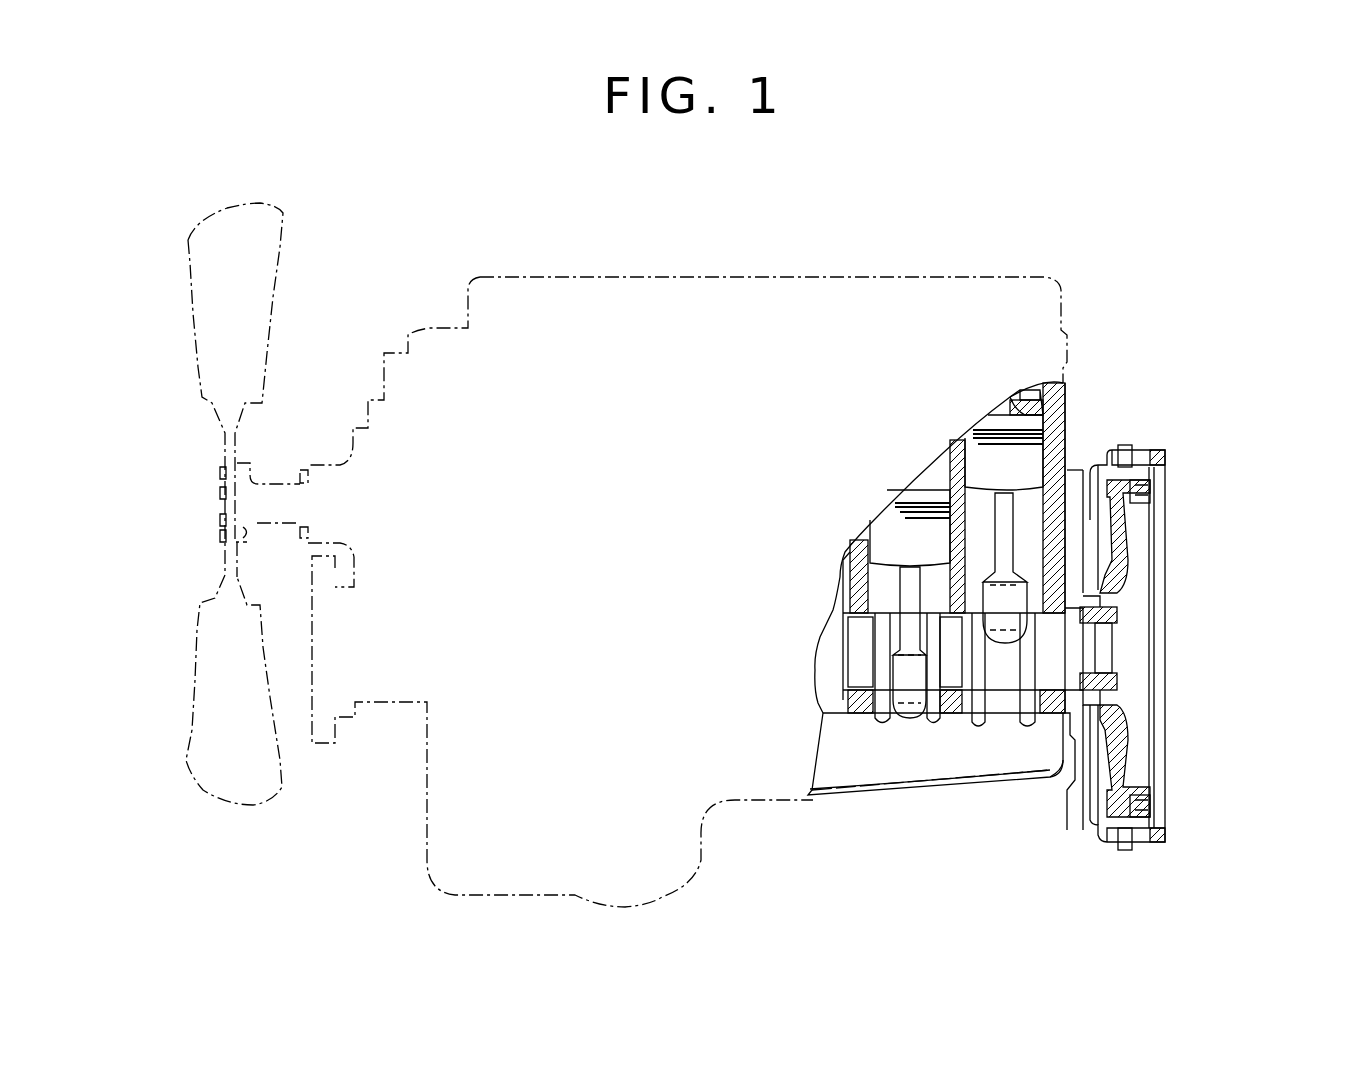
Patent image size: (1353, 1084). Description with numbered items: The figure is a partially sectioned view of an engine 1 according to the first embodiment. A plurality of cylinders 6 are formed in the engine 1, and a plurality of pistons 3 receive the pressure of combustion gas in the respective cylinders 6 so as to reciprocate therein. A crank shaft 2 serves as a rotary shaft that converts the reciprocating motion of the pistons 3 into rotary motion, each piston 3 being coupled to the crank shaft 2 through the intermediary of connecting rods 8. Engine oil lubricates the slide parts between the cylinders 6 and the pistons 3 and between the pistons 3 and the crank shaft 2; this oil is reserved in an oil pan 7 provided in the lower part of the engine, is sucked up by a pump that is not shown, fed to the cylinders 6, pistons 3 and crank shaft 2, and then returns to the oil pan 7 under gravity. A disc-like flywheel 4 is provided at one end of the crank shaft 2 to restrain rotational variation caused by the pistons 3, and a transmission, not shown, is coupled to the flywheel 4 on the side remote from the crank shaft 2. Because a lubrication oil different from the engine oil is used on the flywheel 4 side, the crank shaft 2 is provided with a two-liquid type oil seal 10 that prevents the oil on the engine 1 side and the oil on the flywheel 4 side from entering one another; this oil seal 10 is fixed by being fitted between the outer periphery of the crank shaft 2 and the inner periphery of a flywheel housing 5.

The engine 1 is at (877, 277).
The crank shaft 2 is at (1027, 714).
The piston 3 is at (932, 530).
The flywheel 4 is at (1137, 725).
The flywheel housing 5 is at (1093, 557).
The cylinder 6 is at (945, 560).
The oil pan 7 is at (885, 756).
The connecting rod 8 is at (1005, 545).
The two-liquid type oil seal 10 is at (1085, 706).